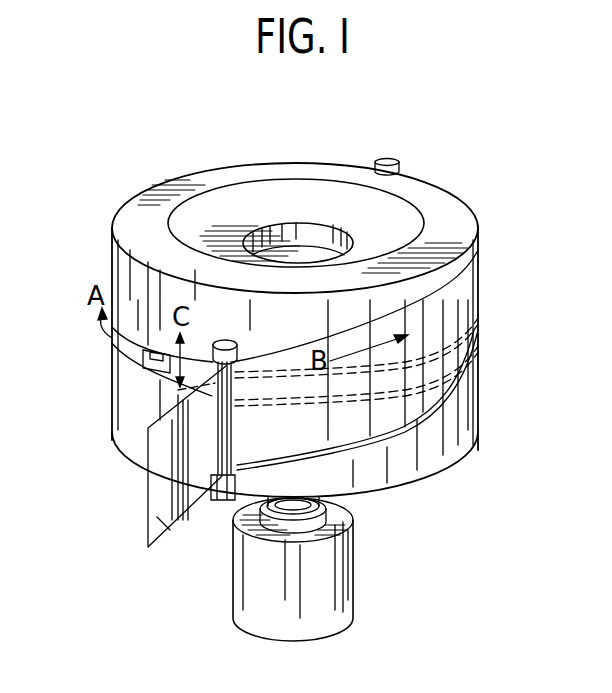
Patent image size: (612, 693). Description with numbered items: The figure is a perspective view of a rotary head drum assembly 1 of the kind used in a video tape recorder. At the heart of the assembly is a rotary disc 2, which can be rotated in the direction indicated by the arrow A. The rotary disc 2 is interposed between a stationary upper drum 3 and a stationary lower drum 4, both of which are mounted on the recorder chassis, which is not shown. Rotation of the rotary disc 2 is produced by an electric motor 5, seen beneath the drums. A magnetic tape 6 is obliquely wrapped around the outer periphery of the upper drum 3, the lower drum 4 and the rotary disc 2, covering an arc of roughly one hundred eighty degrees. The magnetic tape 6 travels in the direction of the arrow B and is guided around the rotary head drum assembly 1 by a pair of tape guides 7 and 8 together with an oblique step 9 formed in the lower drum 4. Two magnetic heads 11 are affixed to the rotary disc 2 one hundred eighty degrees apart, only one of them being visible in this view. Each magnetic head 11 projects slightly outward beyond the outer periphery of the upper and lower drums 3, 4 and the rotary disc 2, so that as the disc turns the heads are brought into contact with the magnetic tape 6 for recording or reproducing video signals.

The rotary head drum assembly 1 is at (184, 165).
The rotary disc 2 is at (142, 362).
The stationary upper drum 3 is at (124, 273).
The stationary lower drum 4 is at (137, 455).
The electric motor 5 is at (345, 567).
The magnetic tape 6 is at (162, 520).
The tape guide 7 is at (224, 340).
The tape guide 8 is at (386, 162).
The oblique step 9 is at (470, 387).
The magnetic head 11 is at (160, 374).